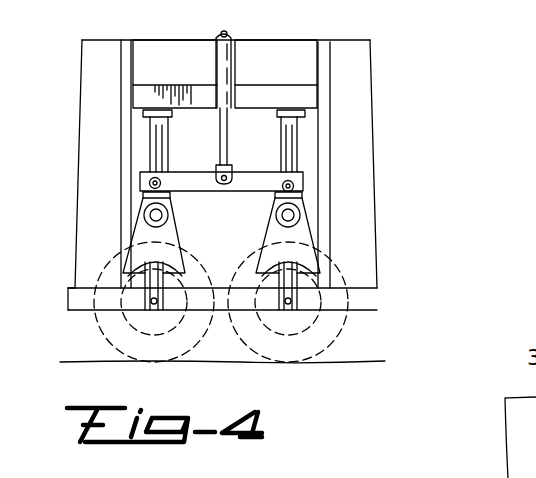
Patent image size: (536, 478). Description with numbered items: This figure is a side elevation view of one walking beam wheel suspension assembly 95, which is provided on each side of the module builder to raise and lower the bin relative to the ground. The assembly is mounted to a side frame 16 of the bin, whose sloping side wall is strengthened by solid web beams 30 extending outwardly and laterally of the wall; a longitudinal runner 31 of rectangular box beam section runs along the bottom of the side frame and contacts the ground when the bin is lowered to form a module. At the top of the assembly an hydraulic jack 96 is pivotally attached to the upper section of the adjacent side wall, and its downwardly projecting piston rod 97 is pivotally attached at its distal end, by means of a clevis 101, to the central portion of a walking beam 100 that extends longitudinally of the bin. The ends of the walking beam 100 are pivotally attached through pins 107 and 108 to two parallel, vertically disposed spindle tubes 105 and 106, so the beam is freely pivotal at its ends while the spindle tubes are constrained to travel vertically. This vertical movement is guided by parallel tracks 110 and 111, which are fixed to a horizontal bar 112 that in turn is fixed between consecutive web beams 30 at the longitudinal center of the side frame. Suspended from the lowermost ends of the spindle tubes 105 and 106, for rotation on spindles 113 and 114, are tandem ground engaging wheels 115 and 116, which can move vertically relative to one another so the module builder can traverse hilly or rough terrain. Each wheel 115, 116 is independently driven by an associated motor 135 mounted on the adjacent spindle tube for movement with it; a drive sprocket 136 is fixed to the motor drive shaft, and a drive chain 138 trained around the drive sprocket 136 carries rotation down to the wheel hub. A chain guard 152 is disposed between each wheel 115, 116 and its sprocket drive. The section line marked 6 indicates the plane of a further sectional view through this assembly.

The section line 6- 6 is at (240, 30).
The side frame 16 is at (76, 254).
The web beam 30 is at (123, 39).
The longitudinal runner 31 is at (380, 300).
The walking beam wheel suspension assembly 95 is at (244, 96).
The hydraulic jack 96 is at (217, 58).
The piston rod 97 is at (236, 127).
The walking beam 100 is at (140, 191).
The clevis 101 is at (218, 180).
The spindle tube 105 is at (160, 144).
The spindle tube 106 is at (284, 148).
The pin 107 is at (150, 181).
The pin 108 is at (294, 187).
The track 110 is at (150, 133).
The track 111 is at (300, 133).
The horizontal bar 112 is at (136, 98).
The spindle 113 is at (152, 307).
The spindle 114 is at (287, 307).
The ground engaging wheel 115 is at (340, 340).
The ground engaging wheel 116 is at (96, 320).
The motor 135 is at (276, 204).
The drive sprocket 136 is at (282, 218).
The drive chain 138 is at (284, 240).
The chain guard 152 is at (140, 232).